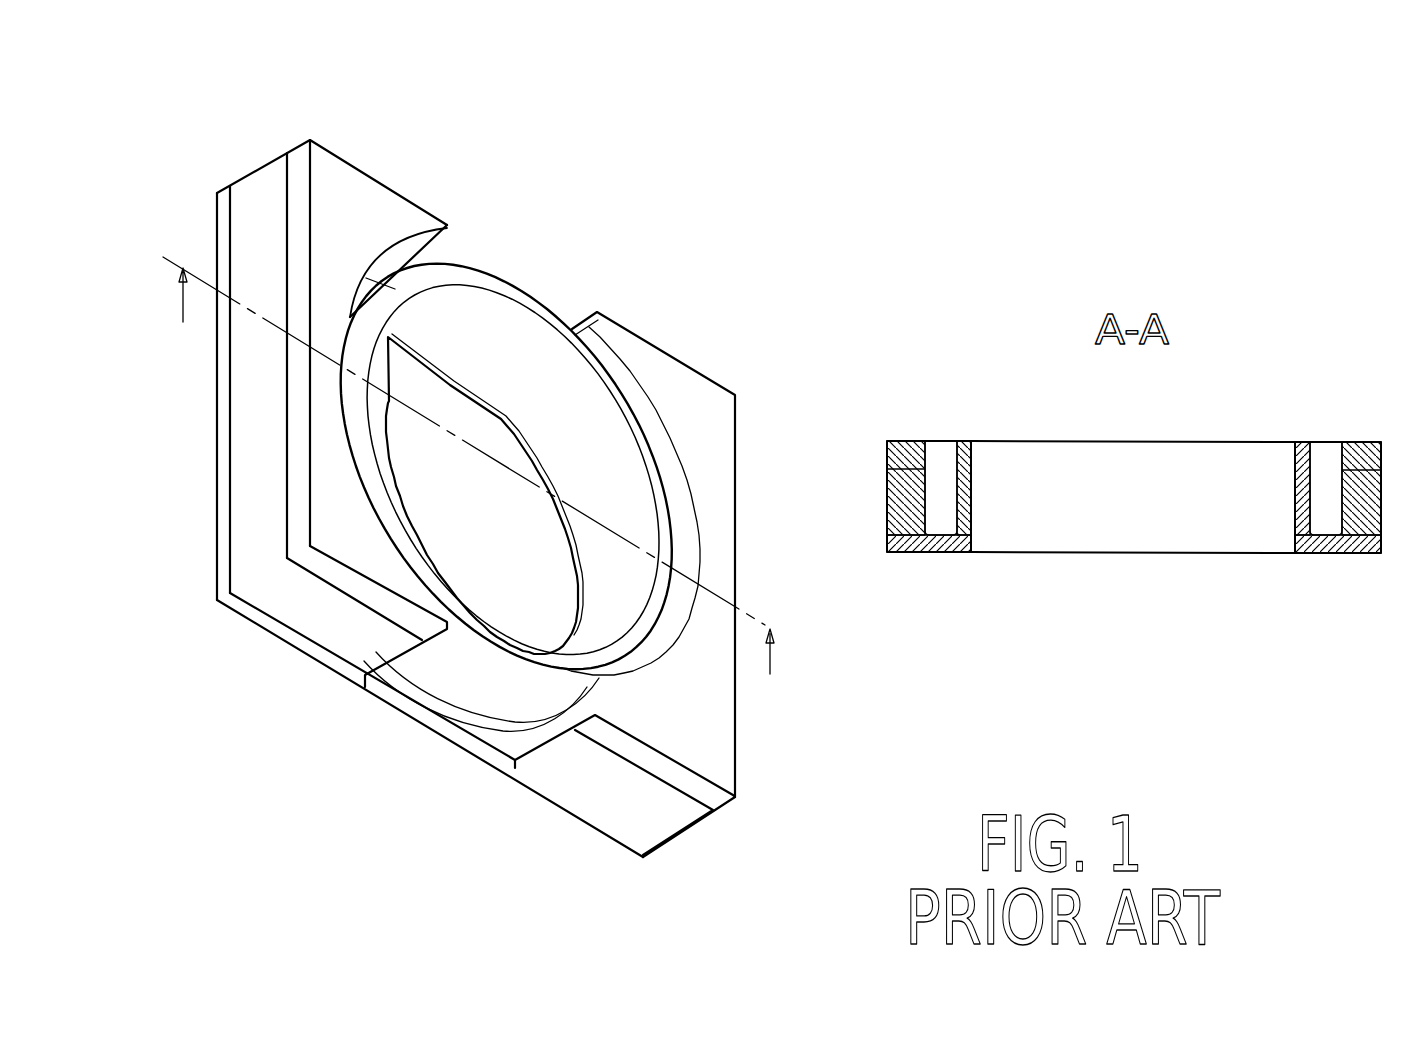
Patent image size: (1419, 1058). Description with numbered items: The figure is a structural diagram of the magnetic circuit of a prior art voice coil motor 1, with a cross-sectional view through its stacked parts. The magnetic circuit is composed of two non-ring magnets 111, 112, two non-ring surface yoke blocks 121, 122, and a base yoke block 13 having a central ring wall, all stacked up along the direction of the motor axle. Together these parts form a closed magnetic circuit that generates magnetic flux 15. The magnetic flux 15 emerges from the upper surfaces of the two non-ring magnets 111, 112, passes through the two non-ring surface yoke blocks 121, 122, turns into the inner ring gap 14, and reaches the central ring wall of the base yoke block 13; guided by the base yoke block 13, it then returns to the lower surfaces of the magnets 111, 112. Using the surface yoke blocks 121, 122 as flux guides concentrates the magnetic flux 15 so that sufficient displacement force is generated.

The voice coil motor 1 is at (806, 90).
The base yoke block 13 is at (517, 345).
The inner ring gap 14 is at (360, 338).
The magnetic flux 15 is at (956, 455).
The non-ring magnet 111 is at (325, 615).
The non-ring magnet 112 is at (605, 790).
The non-ring surface yoke block 121 is at (345, 185).
The non-ring surface yoke block 122 is at (700, 400).